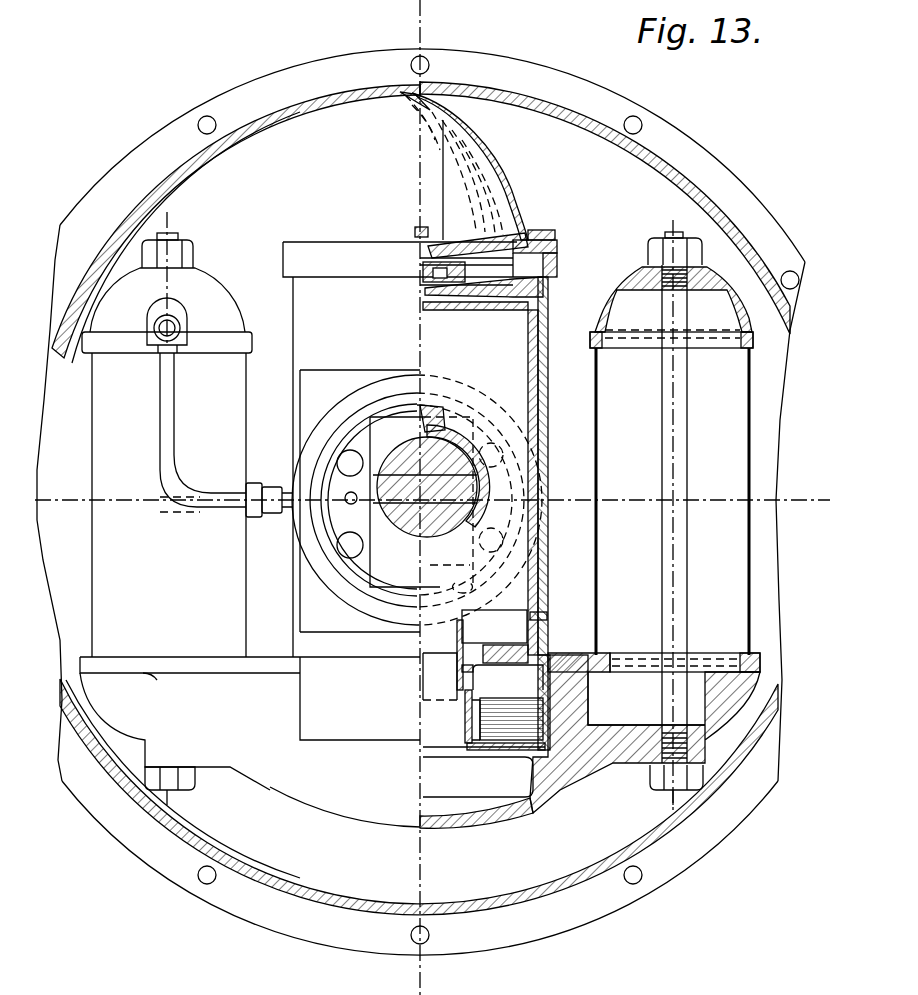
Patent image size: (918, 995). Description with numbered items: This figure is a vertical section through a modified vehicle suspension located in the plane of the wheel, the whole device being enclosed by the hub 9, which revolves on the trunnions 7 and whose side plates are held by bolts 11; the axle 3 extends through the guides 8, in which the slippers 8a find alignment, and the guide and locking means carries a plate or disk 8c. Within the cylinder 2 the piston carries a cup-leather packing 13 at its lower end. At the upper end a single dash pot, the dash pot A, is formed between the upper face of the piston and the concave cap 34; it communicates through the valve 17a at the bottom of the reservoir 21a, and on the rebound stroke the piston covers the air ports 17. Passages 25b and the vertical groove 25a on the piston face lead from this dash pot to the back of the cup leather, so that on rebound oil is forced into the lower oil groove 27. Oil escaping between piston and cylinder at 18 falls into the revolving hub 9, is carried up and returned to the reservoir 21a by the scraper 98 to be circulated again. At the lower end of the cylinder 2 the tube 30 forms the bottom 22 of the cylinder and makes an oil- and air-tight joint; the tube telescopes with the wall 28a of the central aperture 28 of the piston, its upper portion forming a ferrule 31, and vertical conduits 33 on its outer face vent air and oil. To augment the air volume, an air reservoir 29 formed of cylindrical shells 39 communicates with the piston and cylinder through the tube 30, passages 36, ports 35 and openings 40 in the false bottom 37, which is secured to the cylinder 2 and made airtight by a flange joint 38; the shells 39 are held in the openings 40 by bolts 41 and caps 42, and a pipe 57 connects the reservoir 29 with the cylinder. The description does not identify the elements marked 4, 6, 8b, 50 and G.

The cylinder 2 is at (560, 437).
The axle 3 is at (477, 490).
The bearing ring 4 is at (465, 440).
The key 6 is at (425, 415).
The trunnions 7 is at (485, 420).
The guides 8 is at (461, 579).
The sleeve or slippers 8a is at (388, 525).
The bolt hole 8b is at (497, 517).
The plate or disk 8c is at (450, 556).
The hub or wheel center 9 is at (200, 163).
The bolts 11 is at (642, 122).
The packing 13 is at (556, 655).
The air ports 17 is at (548, 282).
The valve 17a is at (420, 275).
The oil escape point 18 is at (395, 603).
The reservoir 21a is at (462, 256).
The bottom of the cylinder 22 is at (500, 750).
The ducts or grooves 25a is at (528, 362).
The passages 25b is at (477, 307).
The oil-grooves 27 is at (548, 625).
The aperture 28 is at (483, 648).
The wall of the aperture 28a is at (457, 645).
The air reservoir 29 is at (404, 579).
The tube 30 is at (488, 693).
The ferrule 31 is at (457, 668).
The vertical conduits 33 is at (465, 718).
The cap 34 is at (557, 250).
The ports 35 is at (535, 776).
The passages 36 is at (484, 773).
The false bottom 37 is at (278, 797).
The flange-joint 38 is at (590, 725).
The cylindrical shells 39 is at (247, 407).
The openings 40 is at (685, 676).
The bolts 41 is at (180, 240).
The caps 42 is at (218, 297).
The small hole 50 is at (345, 504).
The pipe 57 is at (175, 387).
The scraper 98 is at (528, 200).
The dash pot A is at (518, 265).
The gland G is at (511, 719).